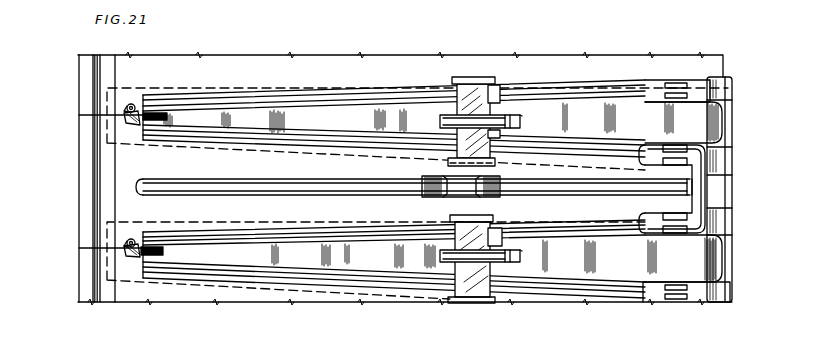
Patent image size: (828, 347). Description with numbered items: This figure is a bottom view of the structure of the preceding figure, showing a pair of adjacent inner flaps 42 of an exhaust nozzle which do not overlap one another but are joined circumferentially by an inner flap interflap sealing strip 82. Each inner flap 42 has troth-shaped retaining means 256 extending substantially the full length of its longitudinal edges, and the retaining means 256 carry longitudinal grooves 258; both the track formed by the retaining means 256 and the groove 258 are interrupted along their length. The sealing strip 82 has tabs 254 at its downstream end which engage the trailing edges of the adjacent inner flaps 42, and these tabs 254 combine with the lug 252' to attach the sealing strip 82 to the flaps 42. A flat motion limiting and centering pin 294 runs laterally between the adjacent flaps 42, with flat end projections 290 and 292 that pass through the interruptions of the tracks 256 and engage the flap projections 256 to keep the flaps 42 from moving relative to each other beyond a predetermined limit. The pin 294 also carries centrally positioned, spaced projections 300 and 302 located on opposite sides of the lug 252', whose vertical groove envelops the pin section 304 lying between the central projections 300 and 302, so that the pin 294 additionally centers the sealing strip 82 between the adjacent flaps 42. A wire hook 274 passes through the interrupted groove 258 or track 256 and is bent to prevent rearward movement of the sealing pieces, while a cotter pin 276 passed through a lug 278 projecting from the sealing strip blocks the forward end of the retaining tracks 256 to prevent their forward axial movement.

The inner flap interflap sealing strip 82 is at (110, 100).
The cotter pin 276 is at (133, 105).
The lug 278 is at (132, 122).
The longitudinal groove 258 is at (240, 103).
The troth-shaped retaining means 256 is at (283, 95).
The motion limiting and centering pin 294 is at (467, 97).
The pin end projection 290 is at (473, 78).
The central projection 300 is at (498, 117).
The lug 252' is at (538, 182).
The tab 254 is at (733, 82).
The pin section 304 is at (457, 153).
The central projection 302 is at (497, 133).
The pin end projection 292 is at (490, 165).
The inner flap 42 is at (713, 190).
The wire hook 274 is at (697, 201).